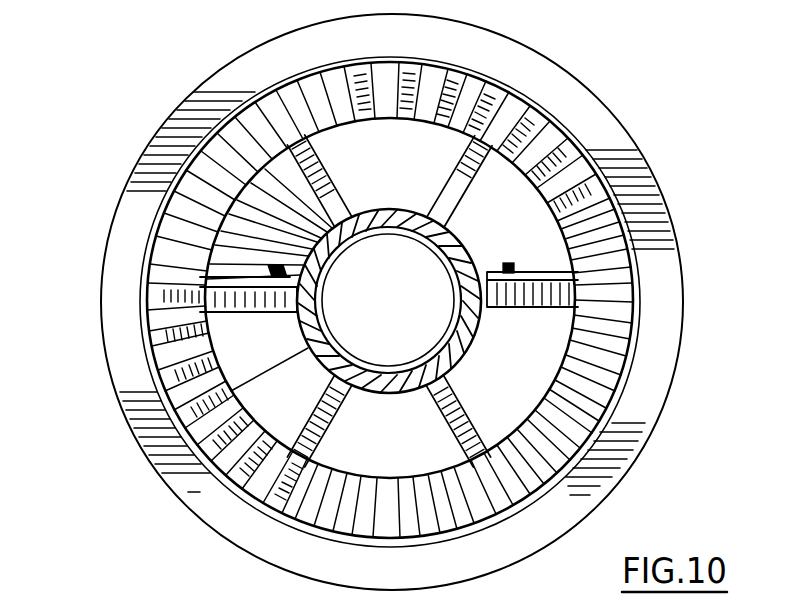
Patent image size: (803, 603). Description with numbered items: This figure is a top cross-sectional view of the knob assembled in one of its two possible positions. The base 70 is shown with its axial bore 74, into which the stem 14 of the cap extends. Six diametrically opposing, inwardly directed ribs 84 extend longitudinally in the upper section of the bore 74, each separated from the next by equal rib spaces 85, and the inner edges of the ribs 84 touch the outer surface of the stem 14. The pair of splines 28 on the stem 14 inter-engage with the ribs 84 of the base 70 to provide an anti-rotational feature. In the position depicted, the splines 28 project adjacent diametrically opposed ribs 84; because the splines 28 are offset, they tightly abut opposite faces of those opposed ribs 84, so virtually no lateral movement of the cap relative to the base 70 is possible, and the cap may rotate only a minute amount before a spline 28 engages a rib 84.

The base 70 is at (105, 425).
The rib spaces 85 is at (382, 123).
The ribs 84 is at (250, 97).
The splines 28 is at (268, 266).
The stem 14 is at (473, 356).
The axial bore 74 is at (387, 253).